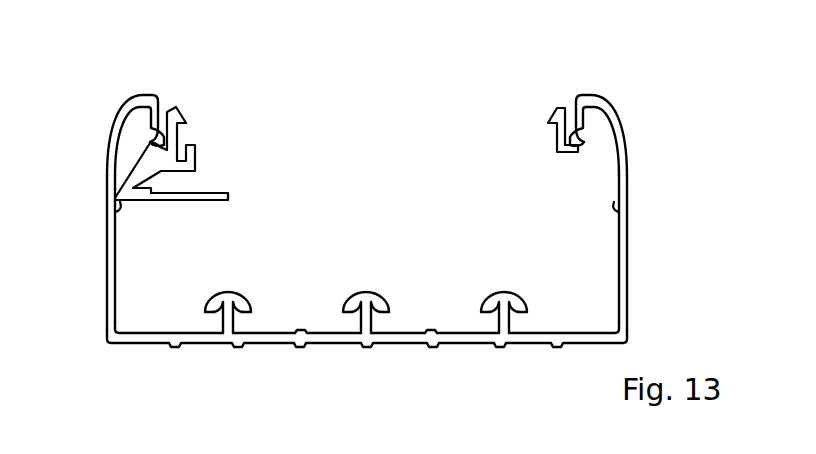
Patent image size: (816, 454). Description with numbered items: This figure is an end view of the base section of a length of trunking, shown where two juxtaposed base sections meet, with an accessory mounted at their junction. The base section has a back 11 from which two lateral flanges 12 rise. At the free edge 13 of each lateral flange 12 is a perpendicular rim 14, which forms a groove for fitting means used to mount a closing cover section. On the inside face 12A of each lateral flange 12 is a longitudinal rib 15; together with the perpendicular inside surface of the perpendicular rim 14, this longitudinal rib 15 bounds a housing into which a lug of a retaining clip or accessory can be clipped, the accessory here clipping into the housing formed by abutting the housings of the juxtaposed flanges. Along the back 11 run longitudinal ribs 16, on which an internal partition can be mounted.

The back 11 is at (340, 340).
The lateral flange 12 is at (107, 260).
The inside face 12A is at (115, 262).
The free edge 13 is at (148, 93).
The perpendicular rim 14 is at (162, 148).
The longitudinal rib 15 is at (121, 208).
The longitudinal ribs 16 is at (361, 322).